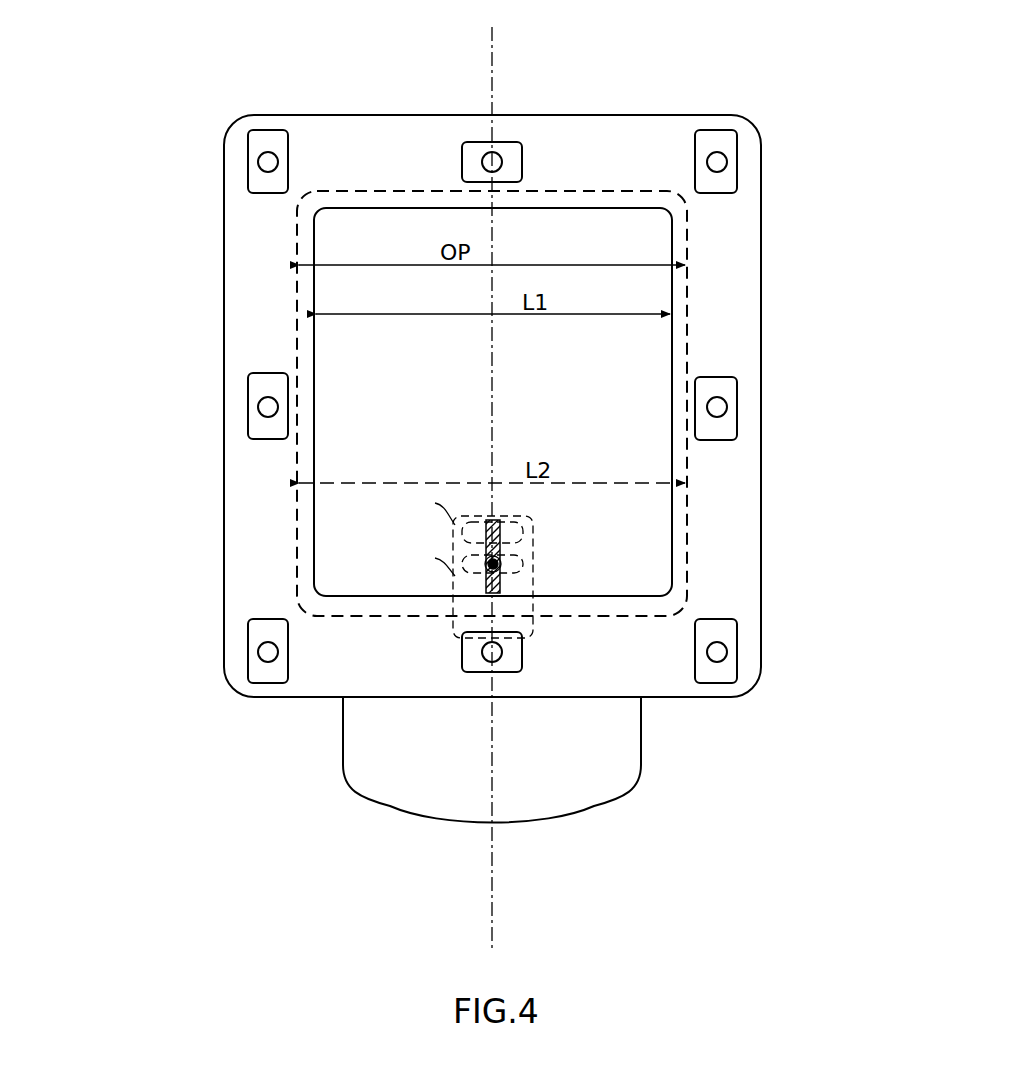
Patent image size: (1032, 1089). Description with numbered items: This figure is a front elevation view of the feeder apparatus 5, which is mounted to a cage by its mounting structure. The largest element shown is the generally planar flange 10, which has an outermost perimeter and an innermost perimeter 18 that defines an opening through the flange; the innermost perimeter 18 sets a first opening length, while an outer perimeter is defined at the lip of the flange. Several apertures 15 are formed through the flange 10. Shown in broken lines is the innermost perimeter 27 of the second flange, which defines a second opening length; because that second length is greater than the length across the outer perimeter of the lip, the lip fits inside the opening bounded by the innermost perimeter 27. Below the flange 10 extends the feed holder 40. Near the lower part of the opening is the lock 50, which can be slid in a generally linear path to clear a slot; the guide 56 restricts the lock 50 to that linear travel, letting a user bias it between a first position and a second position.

The feeder apparatus 5 is at (494, 38).
The flange 10 is at (240, 219).
The aperture 15 is at (713, 165).
The innermost perimeter 18 is at (420, 208).
The innermost perimeter 27 is at (687, 293).
The feed holder 40 is at (632, 795).
The lock 50 is at (533, 580).
The guide 56 is at (493, 565).